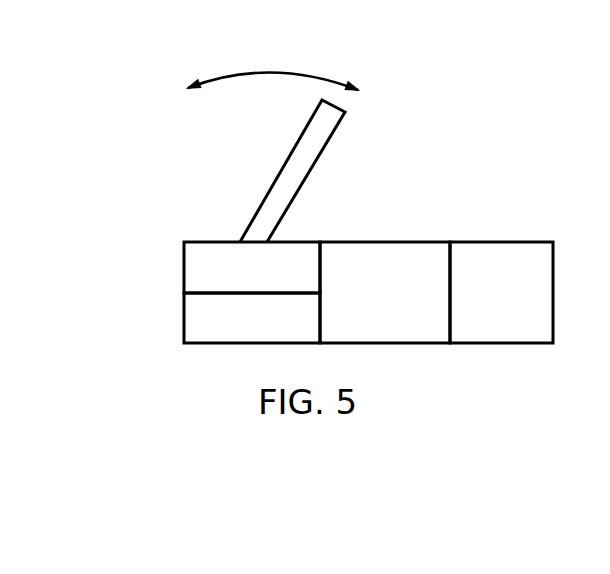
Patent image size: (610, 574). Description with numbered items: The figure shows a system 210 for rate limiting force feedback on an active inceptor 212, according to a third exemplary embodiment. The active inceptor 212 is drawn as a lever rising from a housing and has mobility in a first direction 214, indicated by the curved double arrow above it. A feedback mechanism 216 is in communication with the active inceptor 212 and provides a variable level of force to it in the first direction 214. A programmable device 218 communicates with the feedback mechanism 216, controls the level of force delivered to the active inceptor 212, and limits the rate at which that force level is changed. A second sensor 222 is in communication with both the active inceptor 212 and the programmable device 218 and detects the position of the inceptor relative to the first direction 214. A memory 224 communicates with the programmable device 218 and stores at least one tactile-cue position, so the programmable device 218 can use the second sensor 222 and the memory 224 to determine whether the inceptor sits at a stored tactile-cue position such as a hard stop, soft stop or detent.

The system 210 is at (410, 125).
The active inceptor 212 is at (277, 180).
The first direction 214 is at (278, 72).
The feedback mechanism 216 is at (183, 308).
The programmable device 218 is at (375, 242).
The second sensor 222 is at (183, 260).
The memory 224 is at (503, 243).